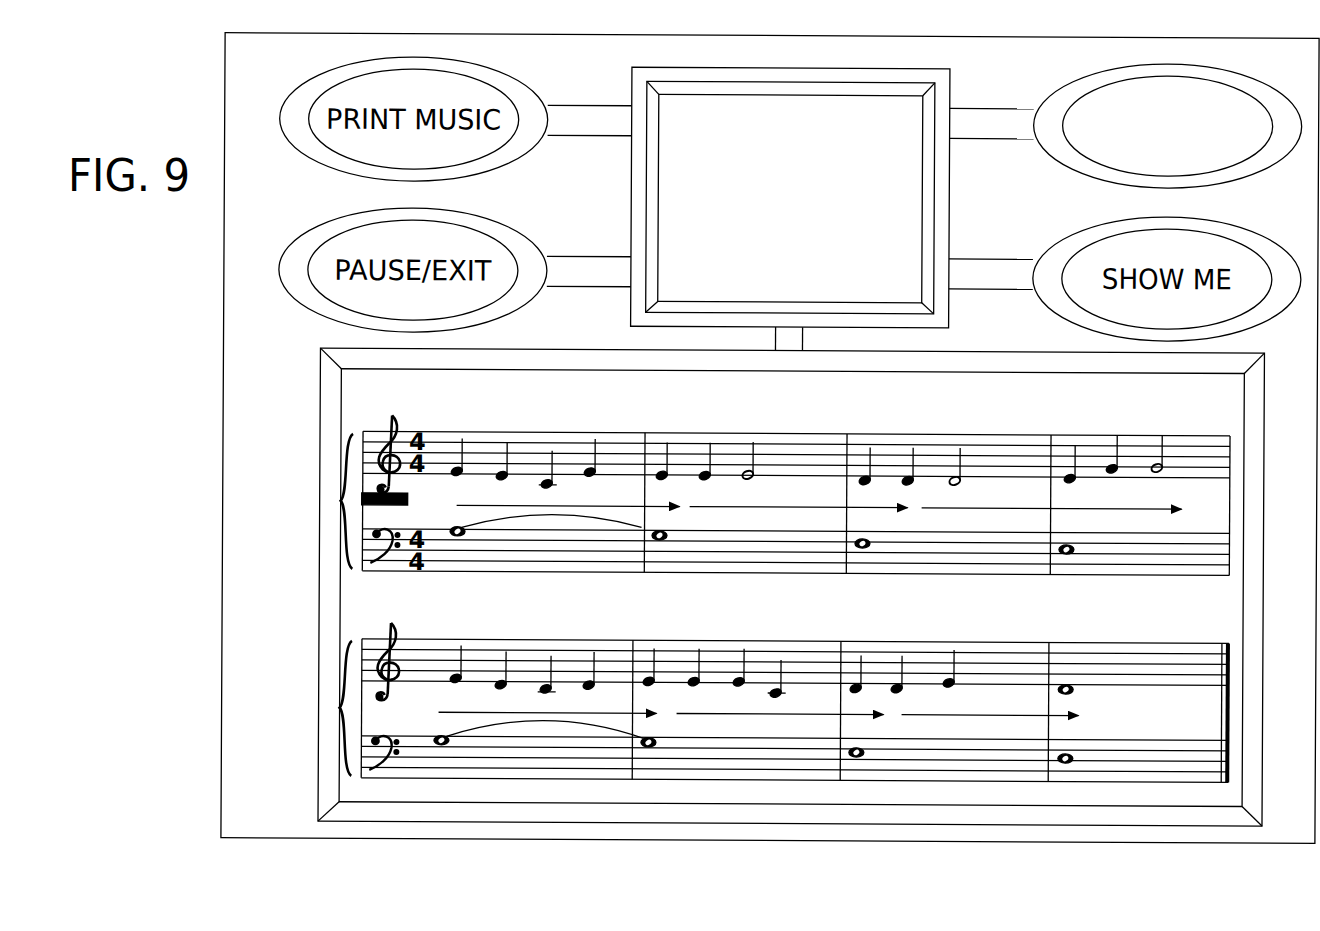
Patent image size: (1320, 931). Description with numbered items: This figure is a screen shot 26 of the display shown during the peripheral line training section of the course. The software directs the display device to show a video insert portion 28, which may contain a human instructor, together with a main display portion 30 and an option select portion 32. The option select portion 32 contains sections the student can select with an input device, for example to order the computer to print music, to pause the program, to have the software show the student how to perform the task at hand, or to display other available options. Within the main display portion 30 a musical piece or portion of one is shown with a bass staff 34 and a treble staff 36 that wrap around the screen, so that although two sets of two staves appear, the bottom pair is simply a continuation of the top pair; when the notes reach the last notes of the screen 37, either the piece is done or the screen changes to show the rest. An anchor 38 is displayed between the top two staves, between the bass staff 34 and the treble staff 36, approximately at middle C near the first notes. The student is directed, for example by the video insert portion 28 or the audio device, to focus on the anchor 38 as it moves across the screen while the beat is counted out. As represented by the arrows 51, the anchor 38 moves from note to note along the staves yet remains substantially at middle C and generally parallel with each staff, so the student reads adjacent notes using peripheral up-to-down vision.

The screen shot 26 is at (208, 586).
The video insert portion 28 is at (838, 70).
The main display portion 30 is at (435, 817).
The option select portion 32 is at (1070, 63).
The bass staff 34 is at (400, 419).
The treble staff 36 is at (383, 577).
The last notes of the screen 37 is at (1114, 727).
The anchor 38 is at (398, 511).
The arrows 51 is at (569, 509).